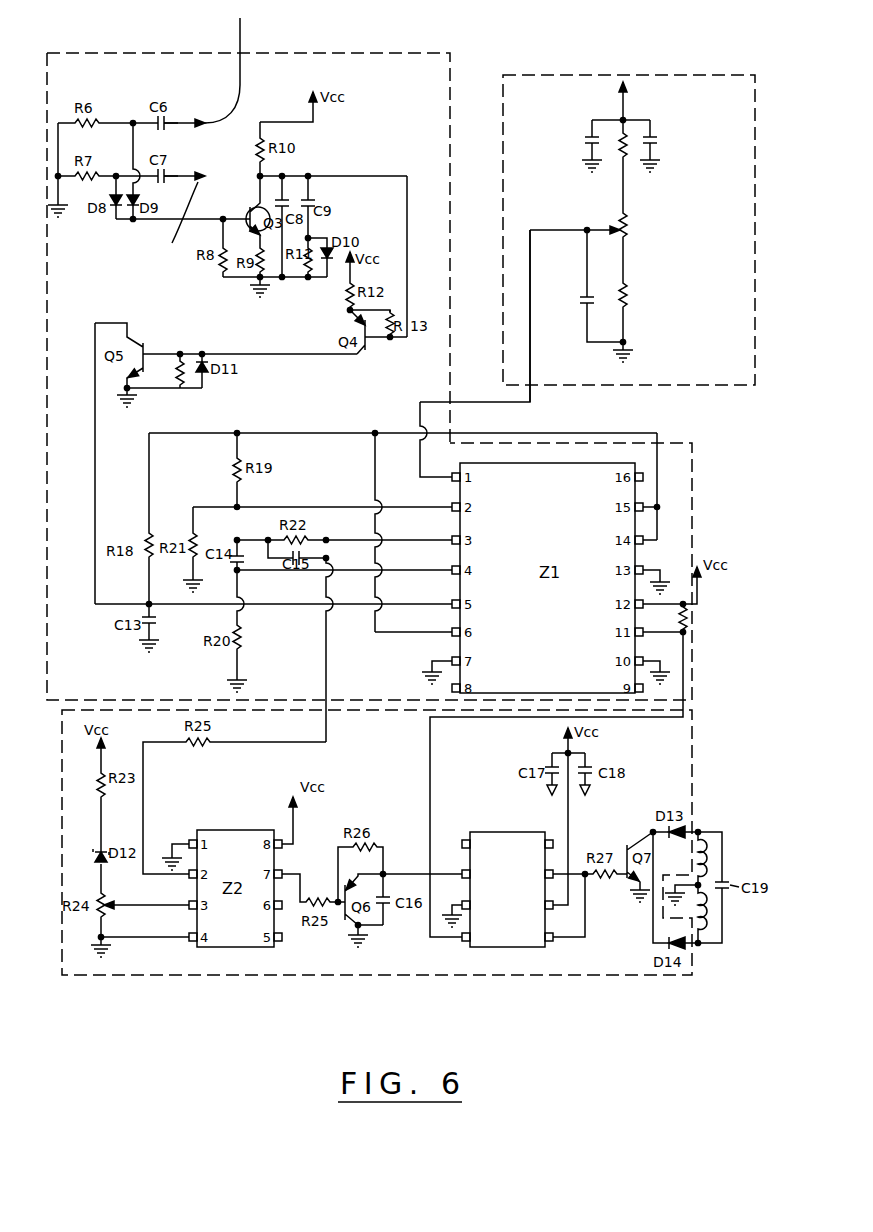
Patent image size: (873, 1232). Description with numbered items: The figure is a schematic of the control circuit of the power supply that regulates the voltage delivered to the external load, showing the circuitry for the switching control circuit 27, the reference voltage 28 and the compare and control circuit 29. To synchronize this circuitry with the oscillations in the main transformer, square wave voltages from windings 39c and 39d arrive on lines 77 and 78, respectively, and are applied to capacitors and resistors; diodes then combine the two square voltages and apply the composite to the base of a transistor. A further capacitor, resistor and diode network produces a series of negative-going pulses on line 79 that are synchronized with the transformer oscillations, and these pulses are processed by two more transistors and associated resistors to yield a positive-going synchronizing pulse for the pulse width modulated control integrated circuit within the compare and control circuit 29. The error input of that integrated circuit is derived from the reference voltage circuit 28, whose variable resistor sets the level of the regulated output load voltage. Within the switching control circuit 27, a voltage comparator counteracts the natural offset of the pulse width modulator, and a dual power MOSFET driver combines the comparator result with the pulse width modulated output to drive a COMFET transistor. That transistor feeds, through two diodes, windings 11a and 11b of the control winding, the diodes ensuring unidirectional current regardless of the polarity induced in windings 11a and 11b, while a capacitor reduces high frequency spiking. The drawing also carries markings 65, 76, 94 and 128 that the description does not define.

The winding 11a is at (705, 852).
The winding 11b is at (705, 916).
The switching control circuit 27 is at (62, 773).
The reference voltage circuit 28 is at (629, 248).
The compare and control circuit 29 is at (47, 551).
The winding 39c is at (287, 64).
The winding 39d is at (123, 221).
The oscillator circuit 65 is at (392, 234).
The supply voltage terminal VL 76 is at (631, 106).
The line 77 is at (180, 120).
The line 78 is at (180, 172).
The line 79 is at (407, 179).
The resistor R14 node 94 is at (166, 392).
The integrated circuit Z3 128 is at (503, 950).